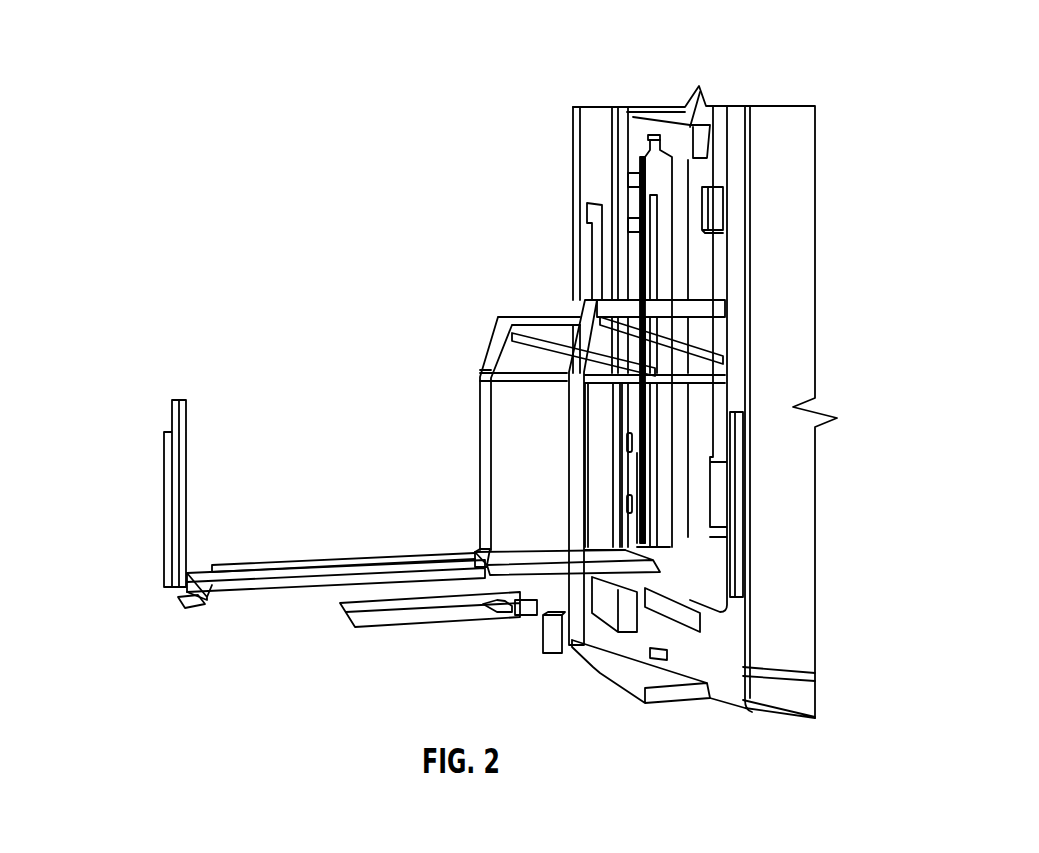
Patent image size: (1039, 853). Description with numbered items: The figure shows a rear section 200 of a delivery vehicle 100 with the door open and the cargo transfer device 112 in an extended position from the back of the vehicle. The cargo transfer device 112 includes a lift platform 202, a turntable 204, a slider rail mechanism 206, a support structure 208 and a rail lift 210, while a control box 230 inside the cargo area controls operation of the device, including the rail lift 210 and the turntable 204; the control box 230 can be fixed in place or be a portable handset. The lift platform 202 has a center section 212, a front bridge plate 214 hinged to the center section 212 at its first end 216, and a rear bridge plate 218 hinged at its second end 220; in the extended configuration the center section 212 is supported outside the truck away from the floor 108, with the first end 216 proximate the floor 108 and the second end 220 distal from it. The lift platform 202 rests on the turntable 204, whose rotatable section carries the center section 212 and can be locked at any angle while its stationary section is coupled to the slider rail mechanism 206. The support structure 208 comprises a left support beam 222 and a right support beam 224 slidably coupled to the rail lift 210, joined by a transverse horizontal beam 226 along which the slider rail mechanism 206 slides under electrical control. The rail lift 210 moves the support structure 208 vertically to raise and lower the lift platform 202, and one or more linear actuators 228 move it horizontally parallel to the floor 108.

The rear section 200 is at (128, 44).
The delivery vehicle 100 is at (777, 121).
The cargo transfer device 112 is at (513, 137).
The floor 108 is at (710, 590).
The rail lift 210 is at (676, 182).
The control box 230 is at (713, 209).
The right support beam 224 is at (695, 308).
The linear actuators 228 is at (548, 345).
The support structure 208 is at (516, 312).
The left support beam 222 is at (529, 320).
The first end 216 is at (466, 552).
The front bridge plate 214 is at (635, 561).
The rear bridge plate 218 is at (161, 481).
The lift platform 202 is at (240, 561).
The center section 212 is at (317, 568).
The second end 220 is at (170, 602).
The turntable 204 is at (370, 606).
The transverse horizontal beam 226 is at (560, 597).
The slider rail mechanism 206 is at (512, 619).